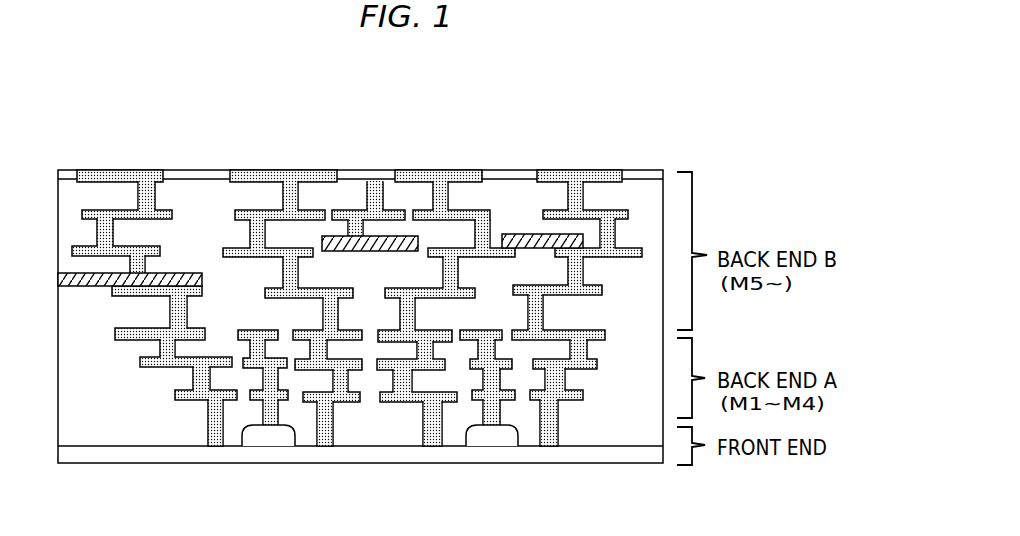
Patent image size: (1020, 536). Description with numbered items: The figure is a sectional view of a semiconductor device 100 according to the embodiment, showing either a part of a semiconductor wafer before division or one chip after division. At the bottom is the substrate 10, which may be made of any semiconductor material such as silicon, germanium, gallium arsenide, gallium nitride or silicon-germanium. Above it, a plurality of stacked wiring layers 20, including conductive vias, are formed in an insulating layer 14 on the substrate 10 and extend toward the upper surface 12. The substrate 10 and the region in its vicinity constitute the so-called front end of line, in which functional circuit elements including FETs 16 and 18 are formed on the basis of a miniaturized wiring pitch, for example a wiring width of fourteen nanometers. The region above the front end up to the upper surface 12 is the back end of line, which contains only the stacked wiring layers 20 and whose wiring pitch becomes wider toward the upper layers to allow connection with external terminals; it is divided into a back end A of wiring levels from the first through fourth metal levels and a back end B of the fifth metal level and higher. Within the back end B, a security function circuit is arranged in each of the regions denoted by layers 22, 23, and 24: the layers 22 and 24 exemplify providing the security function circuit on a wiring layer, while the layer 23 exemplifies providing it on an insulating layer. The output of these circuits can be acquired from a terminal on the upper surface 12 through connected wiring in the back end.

The semiconductor device 100 is at (395, 110).
The substrate 10 is at (588, 460).
The upper surface 12 is at (512, 170).
The insulating layer 14 is at (88, 417).
The FET 16 is at (268, 440).
The FET 18 is at (492, 441).
The stacked wiring layers 20 is at (115, 333).
The layer 22 is at (66, 272).
The layer 23 is at (368, 251).
The layer 24 is at (519, 233).